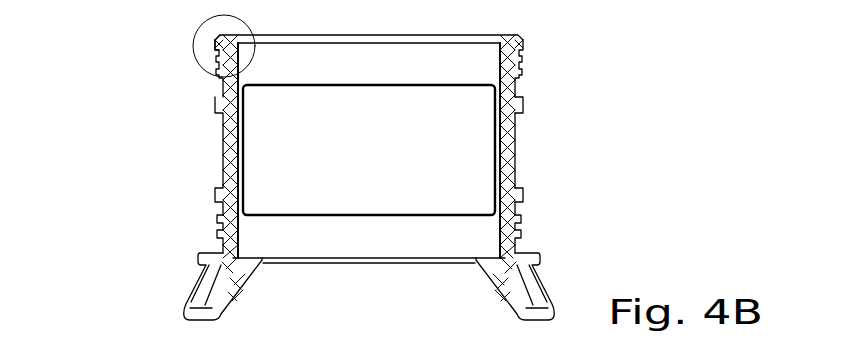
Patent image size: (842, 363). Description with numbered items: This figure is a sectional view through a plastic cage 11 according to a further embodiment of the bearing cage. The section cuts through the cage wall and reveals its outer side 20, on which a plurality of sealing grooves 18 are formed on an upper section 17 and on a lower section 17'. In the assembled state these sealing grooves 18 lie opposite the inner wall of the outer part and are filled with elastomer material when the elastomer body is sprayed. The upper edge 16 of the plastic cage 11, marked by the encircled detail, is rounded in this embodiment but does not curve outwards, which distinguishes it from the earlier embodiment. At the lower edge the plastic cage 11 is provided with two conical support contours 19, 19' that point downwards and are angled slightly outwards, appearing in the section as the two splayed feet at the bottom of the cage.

The plastic cage 11 is at (558, 36).
The upper edge 16 is at (213, 53).
The upper section 17 is at (589, 62).
The lower section 17' is at (599, 231).
The sealing grooves 18 is at (523, 85).
The conical support contour 19 is at (369, 174).
The conical support contour 19' is at (160, 292).
The outer side 20 is at (512, 173).